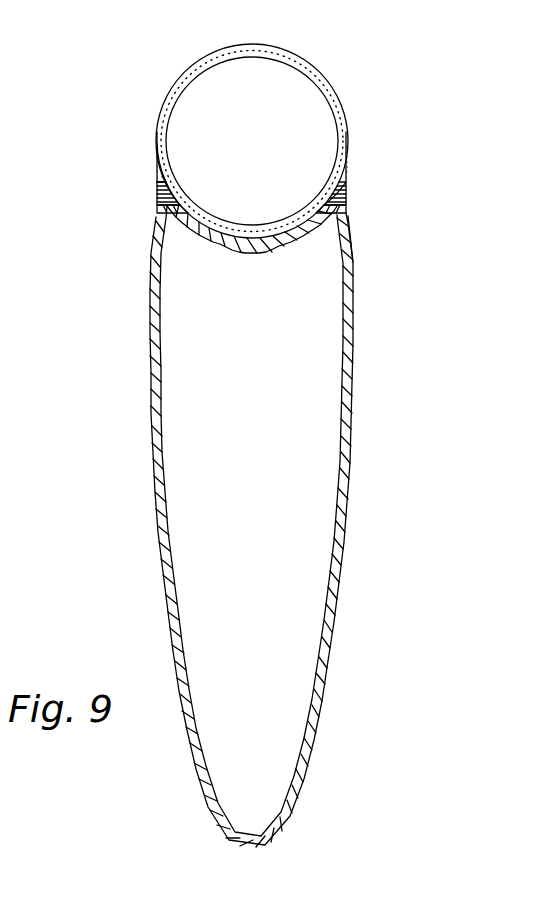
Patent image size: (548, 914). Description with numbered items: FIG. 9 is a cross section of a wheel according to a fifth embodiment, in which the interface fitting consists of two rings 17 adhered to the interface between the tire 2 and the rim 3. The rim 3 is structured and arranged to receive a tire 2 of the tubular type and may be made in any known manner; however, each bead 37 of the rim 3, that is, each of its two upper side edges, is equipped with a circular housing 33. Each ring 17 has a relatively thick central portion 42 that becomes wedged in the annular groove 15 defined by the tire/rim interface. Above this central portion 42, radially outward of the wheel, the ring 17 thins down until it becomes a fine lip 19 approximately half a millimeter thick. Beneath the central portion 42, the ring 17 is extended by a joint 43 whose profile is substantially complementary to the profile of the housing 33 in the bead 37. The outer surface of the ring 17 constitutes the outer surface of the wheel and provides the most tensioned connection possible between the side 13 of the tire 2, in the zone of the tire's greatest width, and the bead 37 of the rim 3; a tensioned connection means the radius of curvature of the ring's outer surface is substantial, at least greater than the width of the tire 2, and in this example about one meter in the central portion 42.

The tire 2 is at (297, 63).
The rim 3 is at (150, 288).
The side of the tire 13 is at (344, 109).
The annular groove 15 is at (330, 208).
The ring 17 is at (157, 181).
The fine lip 19 is at (157, 140).
The circular housing 33 is at (351, 226).
The bead 37 is at (157, 204).
The central portion 42 is at (349, 183).
The joint 43 is at (347, 213).